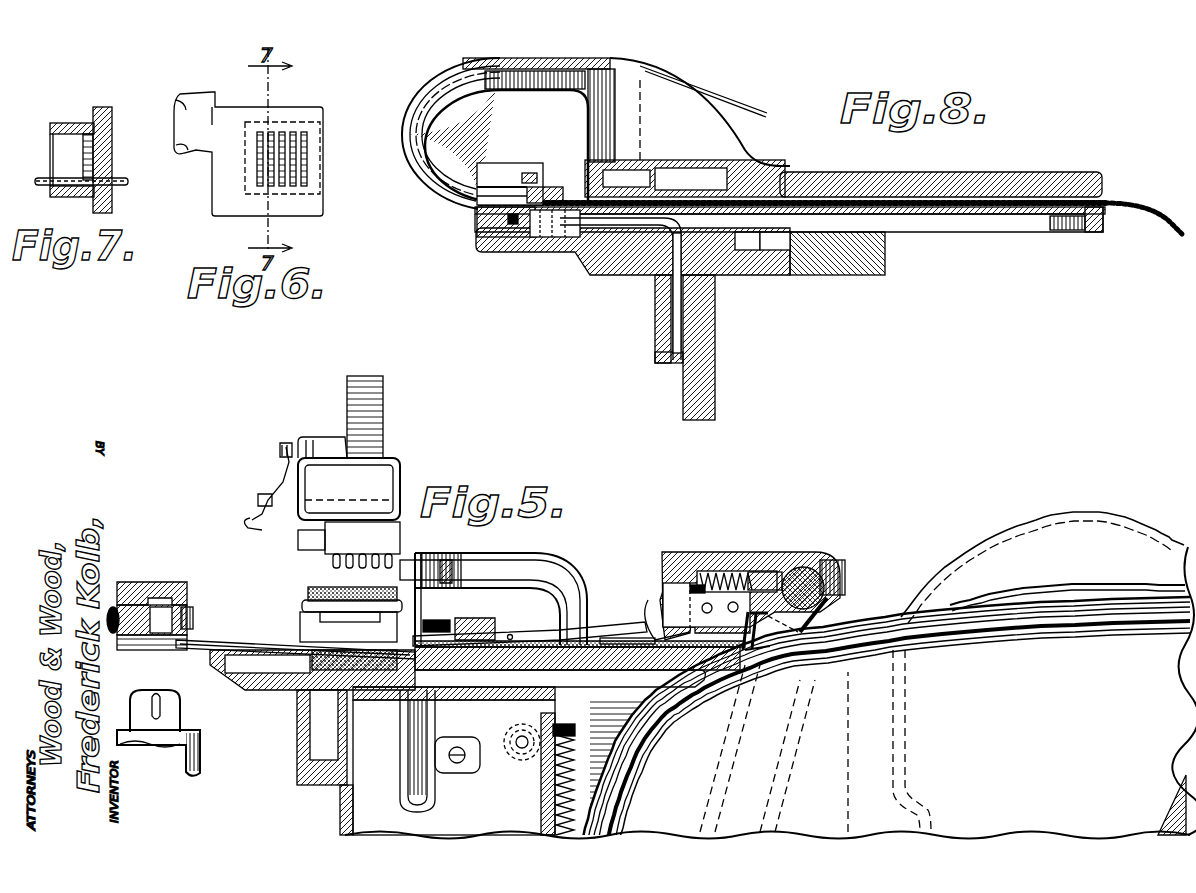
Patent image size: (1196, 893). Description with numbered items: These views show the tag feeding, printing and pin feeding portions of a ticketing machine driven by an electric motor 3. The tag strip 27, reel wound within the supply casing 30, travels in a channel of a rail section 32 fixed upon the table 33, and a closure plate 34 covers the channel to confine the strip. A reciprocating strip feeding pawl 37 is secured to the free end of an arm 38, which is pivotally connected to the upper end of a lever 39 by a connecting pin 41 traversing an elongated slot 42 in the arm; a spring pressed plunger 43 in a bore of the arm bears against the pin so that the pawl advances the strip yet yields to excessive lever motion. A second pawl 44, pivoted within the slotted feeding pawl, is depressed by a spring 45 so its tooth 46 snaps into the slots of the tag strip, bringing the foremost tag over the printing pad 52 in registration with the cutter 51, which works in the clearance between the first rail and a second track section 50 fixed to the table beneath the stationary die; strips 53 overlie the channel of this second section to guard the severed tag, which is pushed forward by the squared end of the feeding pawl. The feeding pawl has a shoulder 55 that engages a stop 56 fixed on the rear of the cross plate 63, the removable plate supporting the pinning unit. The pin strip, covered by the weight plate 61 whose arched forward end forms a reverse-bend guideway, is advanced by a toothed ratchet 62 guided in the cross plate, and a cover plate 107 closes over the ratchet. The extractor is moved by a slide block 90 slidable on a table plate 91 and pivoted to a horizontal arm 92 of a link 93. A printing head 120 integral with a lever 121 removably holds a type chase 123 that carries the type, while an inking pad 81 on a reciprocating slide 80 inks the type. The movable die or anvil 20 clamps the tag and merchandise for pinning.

In FIG. 5, the electric motor 3 is at (1058, 518).
In FIG. 5, the movable die or anvil 20 is at (152, 696).
In FIG. 5, the tag strip 27 is at (1094, 586).
In FIG. 5, the supply casing 30 is at (887, 722).
In FIG. 5, the rail section 32 is at (640, 660).
In FIG. 5, the table 33 is at (529, 685).
In FIG. 5, the closure plate 34 is at (632, 638).
In FIG. 5, the strip feeding pawl 37 is at (650, 633).
In FIG. 5, the arm 38 is at (692, 553).
In FIG. 5, the lever 39 is at (832, 624).
In FIG. 5, the connecting pin 41 is at (828, 560).
In FIG. 5, the elongated slot 42 is at (800, 567).
In FIG. 5, the spring pressed plunger 43 is at (752, 570).
In FIG. 5, the second pawl 44 is at (596, 625).
In FIG. 5, the spring 45 is at (690, 585).
In FIG. 5, the tooth 46 is at (648, 600).
In FIG. 5, the second track section 50 is at (283, 662).
In FIG. 5, the cutter 51 is at (423, 620).
In FIG. 5, the pad 52 is at (336, 672).
In FIG. 5, the strips 53 is at (302, 645).
In FIG. 5, the shoulder 55 is at (470, 620).
In FIG. 5, the stop 56 is at (193, 612).
In FIG. 8, the weight plate 61 is at (752, 133).
In FIG. 8, the ratchet 62 is at (545, 198).
In FIG. 8, the cross plate 63 is at (478, 216).
In FIG. 5, the reciprocating slide 80 is at (342, 612).
In FIG. 5, the inking pad 81 is at (332, 587).
In FIG. 8, the slide block 90 is at (528, 240).
In FIG. 8, the table plate 91 is at (558, 240).
In FIG. 8, the arm 92 is at (602, 222).
In FIG. 8, the link 93 is at (676, 312).
In FIG. 5, the cover plate 107 is at (150, 582).
In FIG. 5, the printing head 120 is at (349, 478).
In FIG. 5, the lever 121 is at (382, 420).
In FIG. 7, the type chase 123 is at (109, 151).
In FIG. 6, the type chase 123 is at (289, 108).
In FIG. 5, the type chase 123 is at (349, 545).